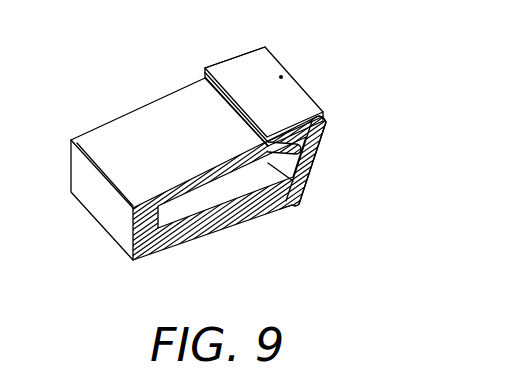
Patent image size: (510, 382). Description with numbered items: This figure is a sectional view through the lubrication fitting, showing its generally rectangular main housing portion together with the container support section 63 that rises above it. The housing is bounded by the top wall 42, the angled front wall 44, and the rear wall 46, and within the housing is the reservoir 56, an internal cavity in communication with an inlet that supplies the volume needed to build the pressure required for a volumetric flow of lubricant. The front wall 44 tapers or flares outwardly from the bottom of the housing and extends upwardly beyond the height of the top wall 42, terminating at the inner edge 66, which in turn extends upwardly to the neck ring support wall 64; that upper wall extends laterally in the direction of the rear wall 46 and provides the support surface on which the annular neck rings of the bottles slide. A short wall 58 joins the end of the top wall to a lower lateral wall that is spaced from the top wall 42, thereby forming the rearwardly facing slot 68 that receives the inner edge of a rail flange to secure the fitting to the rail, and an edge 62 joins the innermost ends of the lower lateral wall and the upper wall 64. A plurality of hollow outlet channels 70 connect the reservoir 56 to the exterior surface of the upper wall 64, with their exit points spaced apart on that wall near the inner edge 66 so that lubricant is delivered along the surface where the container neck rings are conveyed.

The top wall 42 is at (113, 145).
The angled front wall 44 is at (295, 197).
The rear wall 46 is at (98, 203).
The reservoir 56 is at (205, 200).
The short wall 58 is at (268, 165).
The edge 62 is at (207, 83).
The container support section 63 is at (220, 51).
The neck ring support wall 64 is at (252, 62).
The inner edge 66 is at (328, 118).
The slot 68 is at (236, 128).
The outlet channels 70 is at (281, 77).